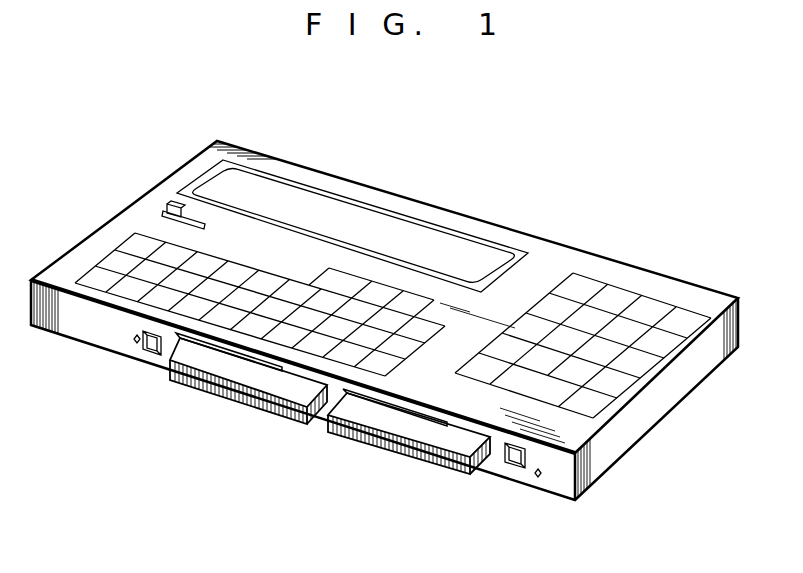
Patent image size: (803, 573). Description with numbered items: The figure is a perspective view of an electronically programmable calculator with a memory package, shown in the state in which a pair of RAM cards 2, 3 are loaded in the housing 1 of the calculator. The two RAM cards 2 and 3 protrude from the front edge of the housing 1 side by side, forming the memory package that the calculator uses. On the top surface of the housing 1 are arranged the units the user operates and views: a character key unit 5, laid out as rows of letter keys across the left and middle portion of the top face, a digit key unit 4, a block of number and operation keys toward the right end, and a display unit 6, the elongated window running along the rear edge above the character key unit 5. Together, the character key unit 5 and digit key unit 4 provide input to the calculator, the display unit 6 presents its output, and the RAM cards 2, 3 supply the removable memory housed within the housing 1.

The housing 1 is at (557, 260).
The RAM card 2 is at (253, 383).
The RAM card 3 is at (412, 432).
The digit key unit 4 is at (648, 370).
The character key unit 5 is at (112, 250).
The display unit 6 is at (405, 230).